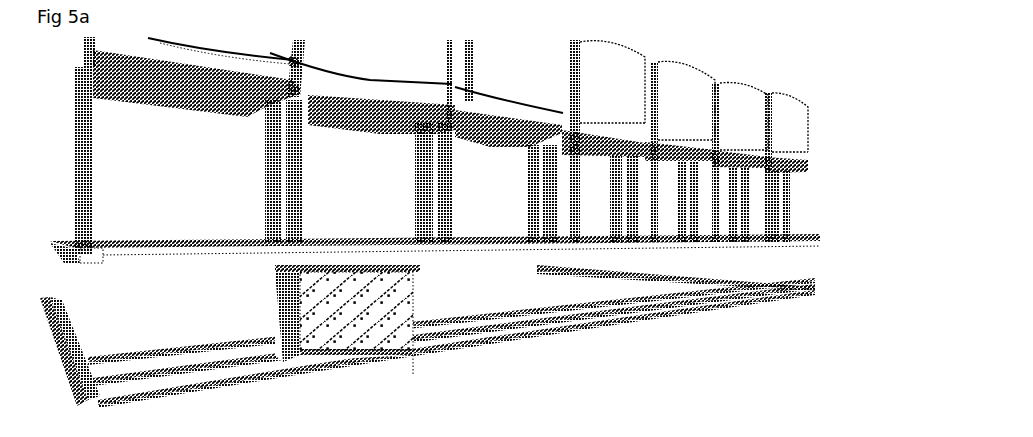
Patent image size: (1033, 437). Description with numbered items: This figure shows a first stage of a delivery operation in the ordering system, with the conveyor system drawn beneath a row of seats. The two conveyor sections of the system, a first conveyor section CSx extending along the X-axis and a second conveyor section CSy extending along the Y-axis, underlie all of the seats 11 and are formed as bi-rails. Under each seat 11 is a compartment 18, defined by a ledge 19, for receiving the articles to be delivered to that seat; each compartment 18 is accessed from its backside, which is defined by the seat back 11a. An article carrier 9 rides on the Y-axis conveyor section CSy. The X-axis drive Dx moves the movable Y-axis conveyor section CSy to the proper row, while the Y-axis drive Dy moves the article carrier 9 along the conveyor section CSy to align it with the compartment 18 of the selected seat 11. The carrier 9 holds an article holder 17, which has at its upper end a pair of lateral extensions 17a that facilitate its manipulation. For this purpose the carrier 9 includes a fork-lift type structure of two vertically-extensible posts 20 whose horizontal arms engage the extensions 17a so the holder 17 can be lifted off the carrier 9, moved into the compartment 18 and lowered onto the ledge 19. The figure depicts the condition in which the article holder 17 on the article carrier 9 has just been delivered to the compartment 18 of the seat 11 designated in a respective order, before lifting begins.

The article carrier 9 is at (276, 338).
The seat 11 is at (450, 112).
The seat back 11a is at (478, 93).
The article holder 17 is at (347, 320).
The lateral extensions 17a is at (285, 269).
The compartment 18 is at (432, 146).
The ledge 19 is at (150, 240).
The vertically-extensible posts 20 is at (287, 300).
The first conveyor section CSx is at (67, 340).
The second conveyor section CSy is at (583, 330).
The X-axis drive Dx is at (81, 375).
The Y-axis drive Dy is at (323, 370).